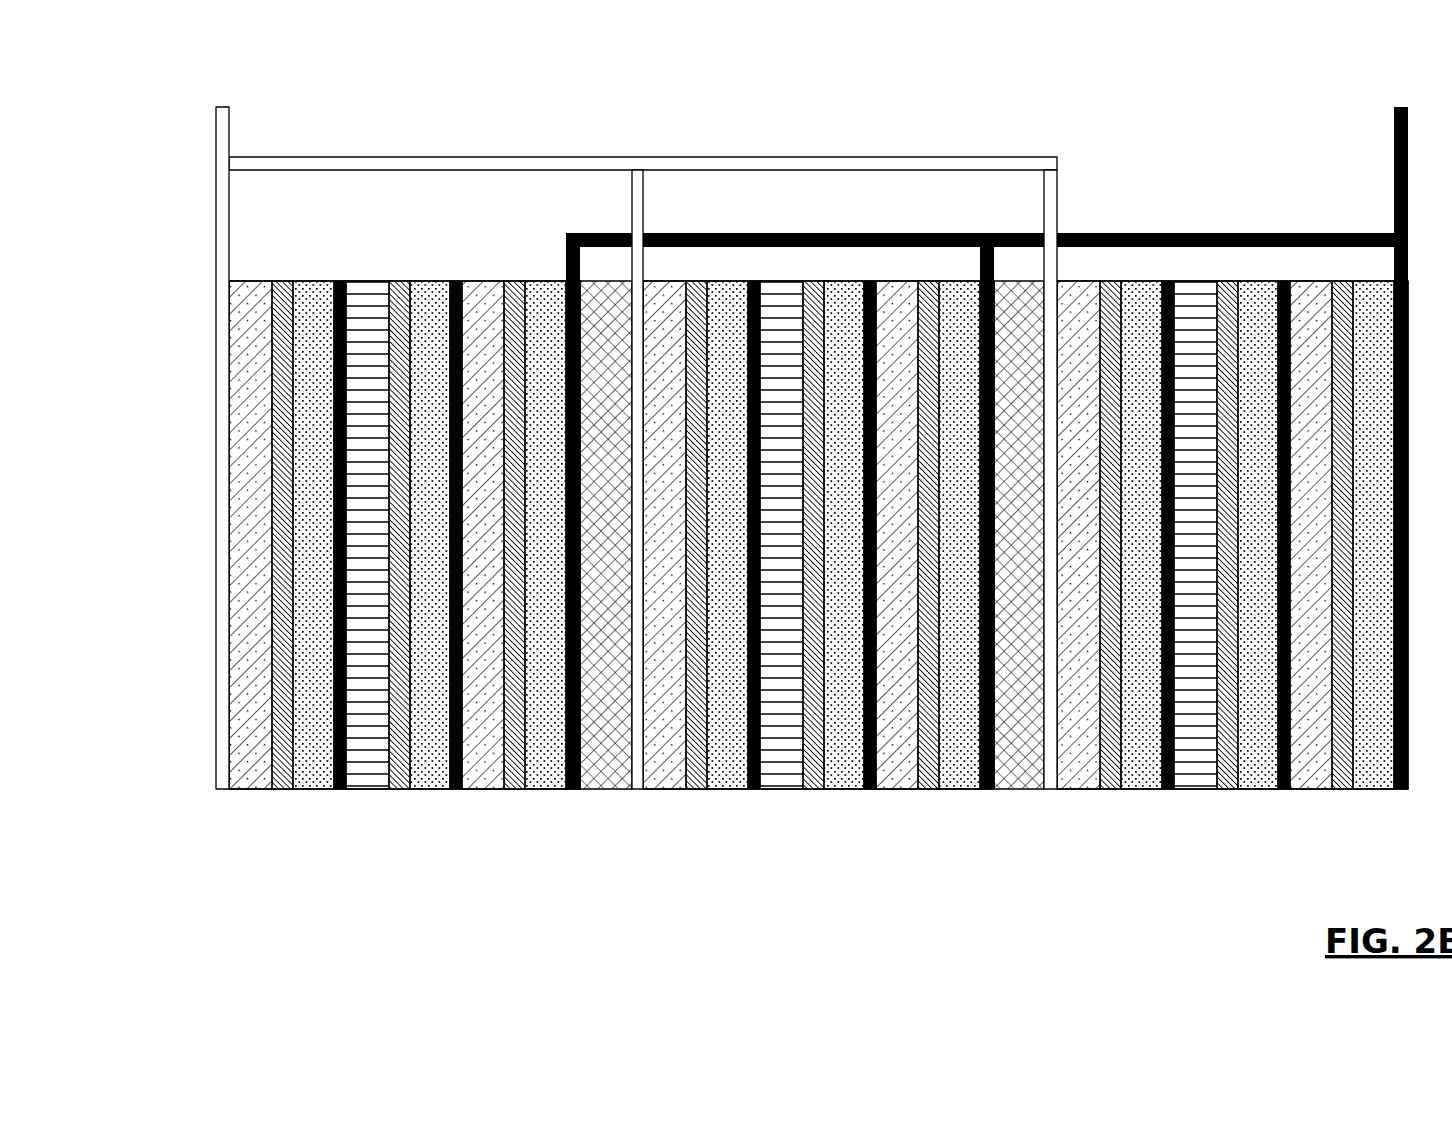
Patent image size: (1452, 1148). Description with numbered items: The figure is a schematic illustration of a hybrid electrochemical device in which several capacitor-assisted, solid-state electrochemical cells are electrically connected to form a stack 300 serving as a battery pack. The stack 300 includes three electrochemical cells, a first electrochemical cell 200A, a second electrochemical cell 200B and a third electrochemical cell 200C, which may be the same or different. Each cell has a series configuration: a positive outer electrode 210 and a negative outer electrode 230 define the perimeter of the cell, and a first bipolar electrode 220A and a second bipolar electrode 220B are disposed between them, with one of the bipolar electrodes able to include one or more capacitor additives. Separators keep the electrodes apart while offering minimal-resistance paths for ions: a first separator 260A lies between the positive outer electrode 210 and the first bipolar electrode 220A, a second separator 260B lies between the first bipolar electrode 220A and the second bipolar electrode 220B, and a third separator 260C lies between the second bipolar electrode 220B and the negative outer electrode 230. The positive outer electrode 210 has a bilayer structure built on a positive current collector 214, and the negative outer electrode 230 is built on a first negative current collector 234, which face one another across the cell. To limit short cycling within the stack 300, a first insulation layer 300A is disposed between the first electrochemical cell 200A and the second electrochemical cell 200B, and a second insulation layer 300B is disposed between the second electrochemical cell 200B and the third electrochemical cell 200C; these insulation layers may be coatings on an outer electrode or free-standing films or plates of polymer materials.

The stack 300 is at (199, 141).
The first electrochemical cell 200A is at (216, 88).
The second electrochemical cell 200B is at (965, 88).
The third electrochemical cell 200C is at (1055, 88).
The positive outer electrode 210 is at (217, 808).
The positive current collector 214 is at (632, 200).
The first bipolar electrode 220A is at (303, 808).
The second bipolar electrode 220B is at (408, 808).
The negative outer electrode 230 is at (530, 808).
The first negative current collector 234 is at (566, 264).
The first separator 260A is at (283, 790).
The second separator 260B is at (401, 790).
The third separator 260C is at (515, 790).
The first insulation layer 300A is at (606, 790).
The second insulation layer 300B is at (1020, 790).